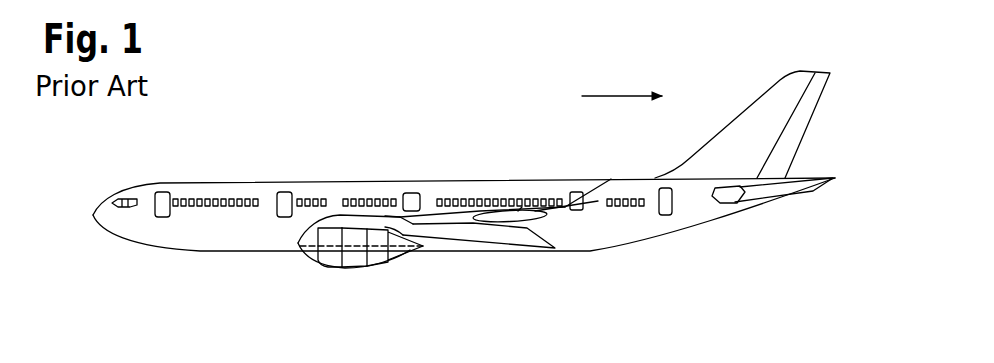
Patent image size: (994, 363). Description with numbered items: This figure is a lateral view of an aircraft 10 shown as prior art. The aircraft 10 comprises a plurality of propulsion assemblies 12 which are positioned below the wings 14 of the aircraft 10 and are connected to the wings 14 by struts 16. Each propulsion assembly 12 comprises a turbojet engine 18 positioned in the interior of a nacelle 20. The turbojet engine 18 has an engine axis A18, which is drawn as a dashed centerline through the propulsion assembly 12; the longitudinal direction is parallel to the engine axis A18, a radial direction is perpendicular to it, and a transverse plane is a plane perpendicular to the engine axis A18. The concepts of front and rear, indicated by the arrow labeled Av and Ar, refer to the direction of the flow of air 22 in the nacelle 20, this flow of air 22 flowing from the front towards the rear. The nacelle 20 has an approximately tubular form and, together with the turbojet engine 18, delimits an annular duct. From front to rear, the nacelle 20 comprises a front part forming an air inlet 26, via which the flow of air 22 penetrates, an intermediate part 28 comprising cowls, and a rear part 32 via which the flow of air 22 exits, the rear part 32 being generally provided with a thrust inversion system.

The aircraft 10 is at (329, 156).
The propulsion assembly 12 is at (310, 258).
The wing 14 is at (467, 217).
The strut 16 is at (403, 226).
The turbojet engine 18 is at (405, 261).
The engine axis A18 is at (313, 245).
The nacelle 20 is at (348, 272).
The flow of air 22 is at (612, 98).
The air inlet 26 is at (330, 267).
The intermediate part 28 is at (358, 257).
The rear part 32 is at (382, 265).